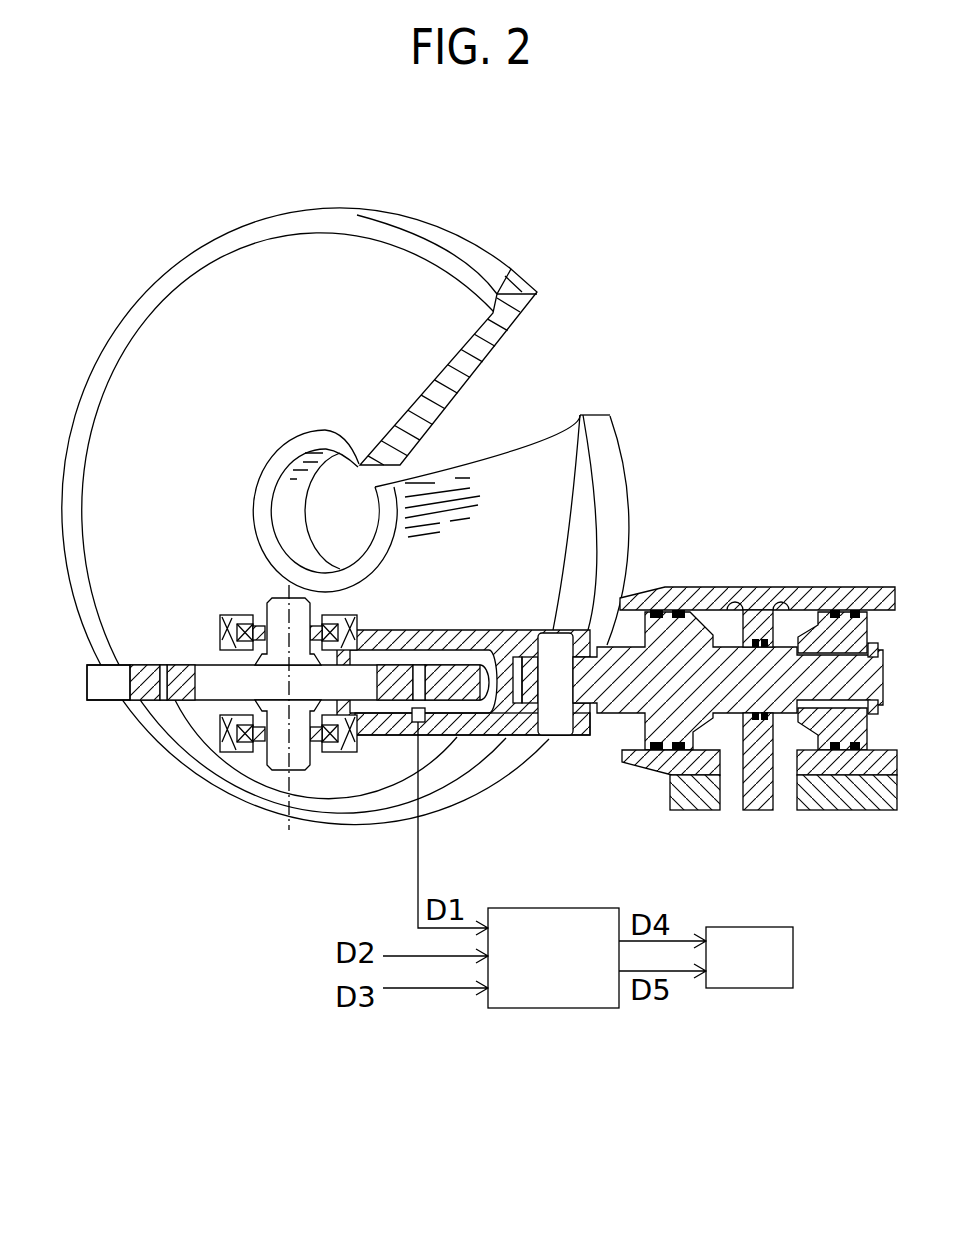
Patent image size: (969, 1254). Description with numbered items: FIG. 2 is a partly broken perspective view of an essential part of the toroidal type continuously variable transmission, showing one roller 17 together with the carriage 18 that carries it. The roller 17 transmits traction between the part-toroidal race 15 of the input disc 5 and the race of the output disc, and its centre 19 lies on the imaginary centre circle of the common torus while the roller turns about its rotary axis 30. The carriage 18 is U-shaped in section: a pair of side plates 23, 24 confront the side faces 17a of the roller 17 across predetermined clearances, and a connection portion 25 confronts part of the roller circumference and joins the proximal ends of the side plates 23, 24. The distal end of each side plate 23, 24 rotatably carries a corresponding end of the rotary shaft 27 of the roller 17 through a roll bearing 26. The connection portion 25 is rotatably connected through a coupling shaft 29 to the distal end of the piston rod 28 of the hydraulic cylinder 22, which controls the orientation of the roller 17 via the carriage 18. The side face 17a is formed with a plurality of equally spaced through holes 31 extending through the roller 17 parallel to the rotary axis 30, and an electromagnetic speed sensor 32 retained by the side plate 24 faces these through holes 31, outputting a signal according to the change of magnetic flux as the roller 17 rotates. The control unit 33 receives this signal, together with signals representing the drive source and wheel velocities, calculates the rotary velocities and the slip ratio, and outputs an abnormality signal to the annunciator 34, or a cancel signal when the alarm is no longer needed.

The input disc 5 is at (511, 270).
The part-toroidal race 15 is at (357, 265).
The roller 17 is at (207, 663).
The side face 17a is at (103, 665).
The carriage 18 is at (478, 630).
The centre 19 is at (288, 683).
The hydraulic cylinder 22 is at (718, 587).
The side plate 23 is at (433, 638).
The side plate 24 is at (457, 735).
The connection portion 25 is at (516, 655).
The roll bearing 26 is at (258, 620).
The rotary shaft 27 is at (265, 762).
The piston rod 28 is at (607, 705).
The coupling shaft 29 is at (553, 735).
The rotary axis 30 is at (297, 803).
The through hole 31 is at (163, 690).
The electromagnetic speed sensor 32 is at (410, 720).
The control unit 33 is at (550, 1008).
The annunciator 34 is at (749, 988).